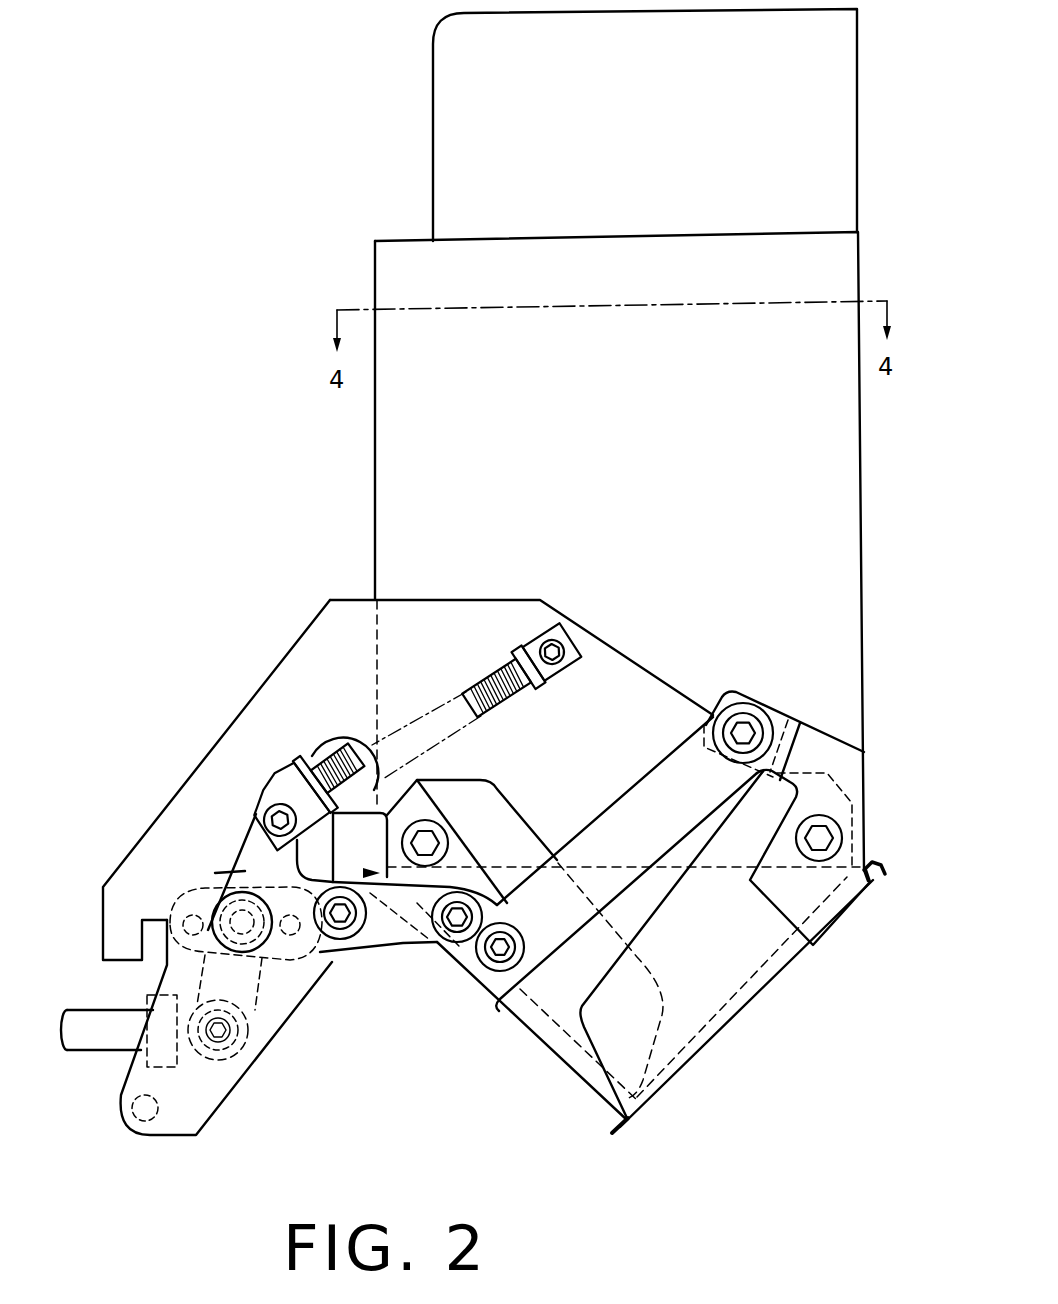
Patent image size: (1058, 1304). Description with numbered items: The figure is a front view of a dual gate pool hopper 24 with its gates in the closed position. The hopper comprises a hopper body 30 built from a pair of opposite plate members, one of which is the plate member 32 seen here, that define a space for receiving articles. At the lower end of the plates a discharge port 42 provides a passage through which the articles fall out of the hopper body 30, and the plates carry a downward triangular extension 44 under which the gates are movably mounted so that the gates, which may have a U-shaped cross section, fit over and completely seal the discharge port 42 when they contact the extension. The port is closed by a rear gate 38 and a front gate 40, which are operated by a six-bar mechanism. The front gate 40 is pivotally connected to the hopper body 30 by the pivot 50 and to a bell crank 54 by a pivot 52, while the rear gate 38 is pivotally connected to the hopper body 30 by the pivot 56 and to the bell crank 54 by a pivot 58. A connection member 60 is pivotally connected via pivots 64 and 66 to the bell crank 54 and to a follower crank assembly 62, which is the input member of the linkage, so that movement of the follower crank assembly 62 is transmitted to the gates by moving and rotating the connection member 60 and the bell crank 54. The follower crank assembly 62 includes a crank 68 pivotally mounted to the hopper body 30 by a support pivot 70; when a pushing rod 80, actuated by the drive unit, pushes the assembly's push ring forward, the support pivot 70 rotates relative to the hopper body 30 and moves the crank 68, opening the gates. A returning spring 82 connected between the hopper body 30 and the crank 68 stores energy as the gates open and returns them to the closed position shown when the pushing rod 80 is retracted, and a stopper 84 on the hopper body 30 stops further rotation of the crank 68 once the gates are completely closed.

The pool hopper 24 is at (176, 624).
The hopper body 30 is at (330, 597).
The plate member 32 is at (287, 655).
The rear gate 38 is at (563, 1020).
The front gate 40 is at (748, 945).
The discharge port 42 is at (643, 1107).
The downward triangular extension 44 is at (733, 1000).
The pivot 50 is at (832, 838).
The pivot 52 is at (750, 720).
The bell crank 54 is at (627, 793).
The pivot 56 is at (455, 822).
The pivot 58 is at (497, 968).
The connection member 60 is at (403, 948).
The follower crank assembly 62 is at (232, 824).
The pivot 64 is at (452, 937).
The pivot 66 is at (342, 932).
The crank 68 is at (236, 884).
The support pivot 70 is at (245, 935).
The pushing rod 80 is at (95, 1052).
The returning spring 82 is at (493, 655).
The stopper 84 is at (334, 735).